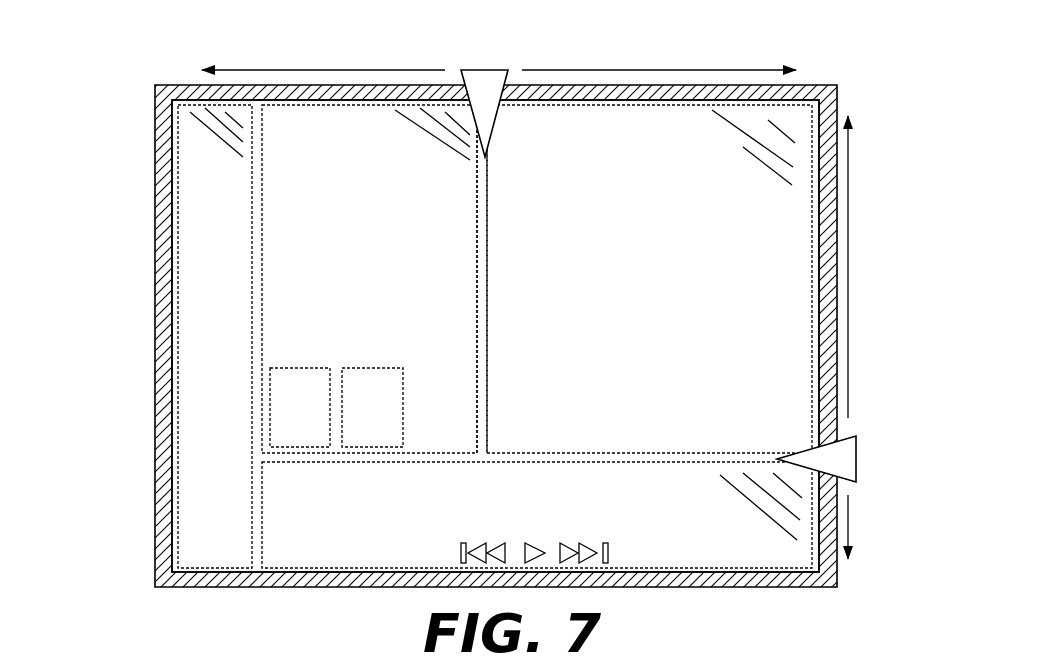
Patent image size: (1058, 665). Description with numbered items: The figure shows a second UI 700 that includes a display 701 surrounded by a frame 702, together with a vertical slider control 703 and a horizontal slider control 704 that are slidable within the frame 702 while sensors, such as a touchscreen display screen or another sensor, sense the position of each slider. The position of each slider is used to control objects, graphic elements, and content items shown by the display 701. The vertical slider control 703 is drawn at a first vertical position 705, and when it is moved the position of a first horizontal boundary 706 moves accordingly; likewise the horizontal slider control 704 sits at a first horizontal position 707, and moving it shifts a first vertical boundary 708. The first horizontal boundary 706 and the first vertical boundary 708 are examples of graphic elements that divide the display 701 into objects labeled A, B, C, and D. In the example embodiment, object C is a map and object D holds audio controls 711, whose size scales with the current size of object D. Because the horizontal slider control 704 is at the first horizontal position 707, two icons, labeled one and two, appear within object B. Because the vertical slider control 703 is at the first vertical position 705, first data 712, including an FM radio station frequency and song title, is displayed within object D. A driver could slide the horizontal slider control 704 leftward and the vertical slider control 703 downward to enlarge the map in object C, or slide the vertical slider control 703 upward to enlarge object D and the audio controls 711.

The second UI 700 is at (118, 116).
The display 701 is at (168, 221).
The frame 702 is at (160, 313).
The vertical slider control 703 is at (859, 462).
The horizontal slider control 704 is at (483, 69).
The first vertical position 705 is at (866, 416).
The first horizontal boundary 706 is at (666, 465).
The first horizontal position 707 is at (524, 51).
The first vertical boundary 708 is at (489, 240).
The audio controls 711 is at (438, 556).
The first data 712 is at (260, 485).